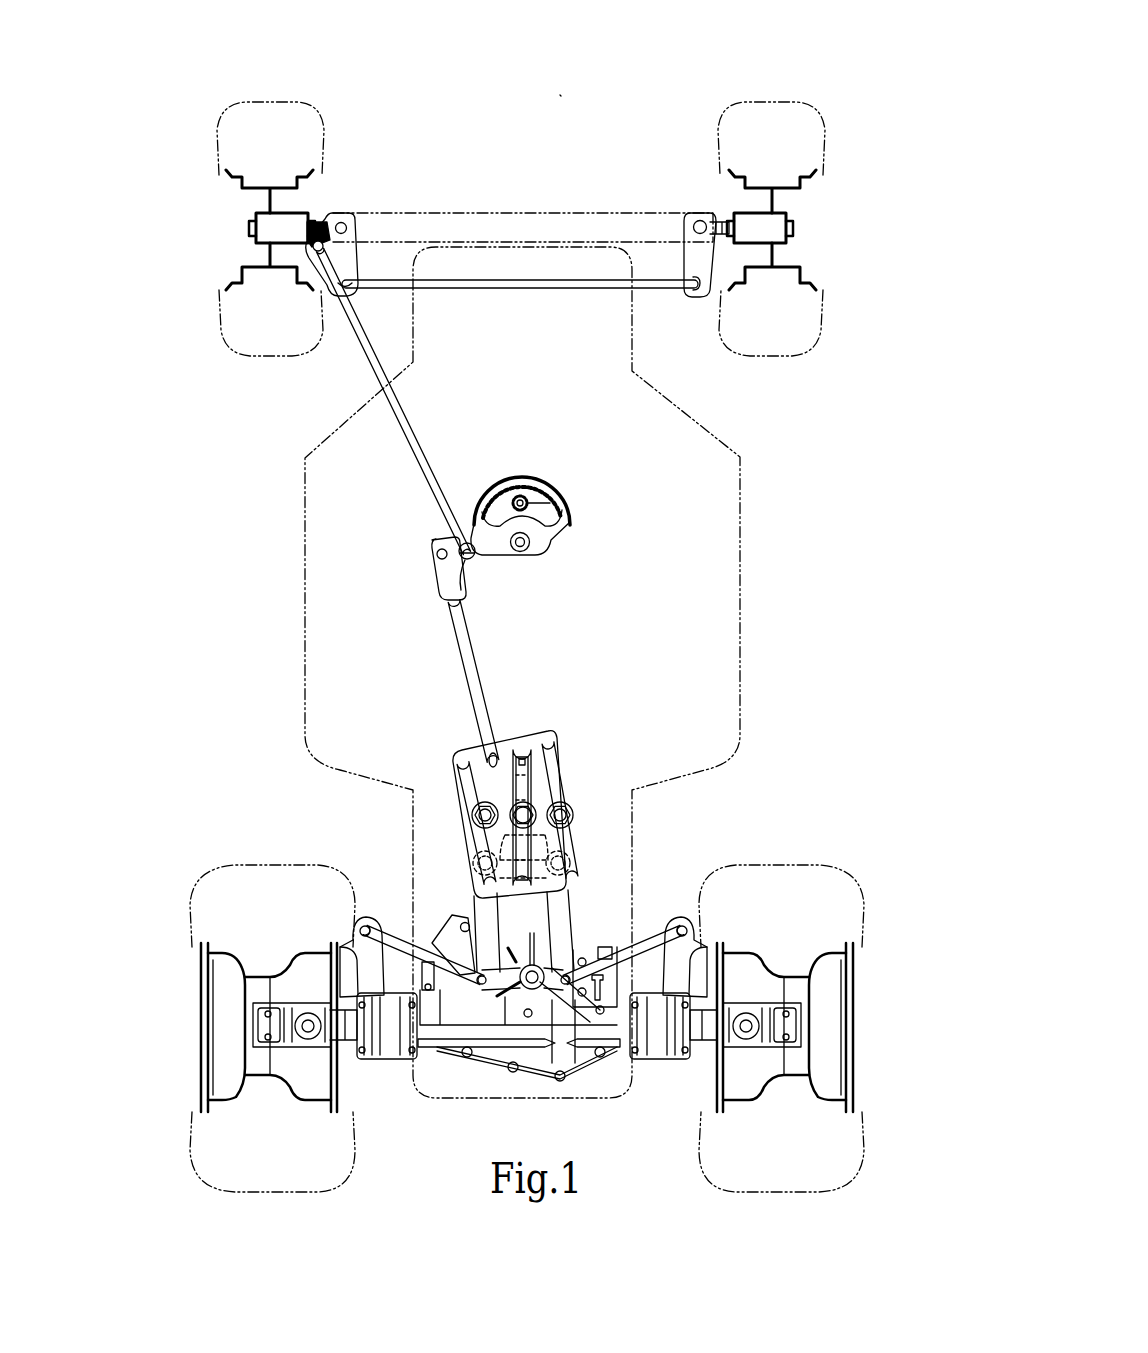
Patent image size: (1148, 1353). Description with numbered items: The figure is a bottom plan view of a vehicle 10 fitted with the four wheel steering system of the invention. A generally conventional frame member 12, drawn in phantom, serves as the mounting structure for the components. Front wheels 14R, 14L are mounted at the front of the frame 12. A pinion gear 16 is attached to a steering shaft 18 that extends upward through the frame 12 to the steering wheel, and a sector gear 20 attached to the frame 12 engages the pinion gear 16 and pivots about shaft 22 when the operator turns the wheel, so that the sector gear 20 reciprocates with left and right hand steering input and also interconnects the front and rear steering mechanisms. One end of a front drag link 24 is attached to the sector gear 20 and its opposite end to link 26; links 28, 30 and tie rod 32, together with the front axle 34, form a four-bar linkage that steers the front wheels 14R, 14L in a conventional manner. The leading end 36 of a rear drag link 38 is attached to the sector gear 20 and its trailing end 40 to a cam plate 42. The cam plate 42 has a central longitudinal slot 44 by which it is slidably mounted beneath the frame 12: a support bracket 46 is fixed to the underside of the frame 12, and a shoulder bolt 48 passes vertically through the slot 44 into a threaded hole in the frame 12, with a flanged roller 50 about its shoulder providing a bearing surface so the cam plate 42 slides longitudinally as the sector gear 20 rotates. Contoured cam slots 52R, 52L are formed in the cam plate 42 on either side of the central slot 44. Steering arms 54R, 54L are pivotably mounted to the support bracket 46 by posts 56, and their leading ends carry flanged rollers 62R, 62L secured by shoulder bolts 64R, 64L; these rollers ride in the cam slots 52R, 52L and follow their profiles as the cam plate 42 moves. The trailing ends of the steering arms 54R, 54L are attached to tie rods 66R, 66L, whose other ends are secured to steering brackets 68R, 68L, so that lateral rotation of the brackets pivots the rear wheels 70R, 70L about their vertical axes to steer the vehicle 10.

The vehicle 10 is at (563, 100).
The frame member 12 is at (740, 482).
The front wheel 14R is at (322, 115).
The front wheel 14L is at (828, 123).
The pinion gear 16 is at (552, 490).
The steering shaft 18 is at (520, 494).
The sector gear 20 is at (575, 525).
The shaft 22 is at (530, 545).
The front drag link 24 is at (415, 437).
The link 26 is at (318, 240).
The link 28 is at (352, 256).
The link 30 is at (685, 262).
The tie rod 32 is at (650, 287).
The front axle 34 is at (497, 215).
The leading end 36 is at (432, 556).
The rear drag link 38 is at (470, 650).
The trailing end 40 is at (497, 750).
The cam plate 42 is at (560, 730).
The longitudinal slot 44 is at (525, 748).
The support bracket 46 is at (528, 765).
The shoulder bolt 48 is at (540, 796).
The flanged roller 50 is at (545, 818).
The cam slot 52R is at (465, 763).
The cam slot 52L is at (580, 878).
The steering arm 54R is at (478, 902).
The steering arm 54L is at (575, 905).
The post 56 is at (519, 998).
The flanged roller 62R is at (478, 810).
The flanged roller 62L is at (568, 821).
The shoulder bolt 64R is at (480, 818).
The shoulder bolt 64L is at (562, 813).
The tie rod 66R is at (390, 925).
The tie rod 66L is at (620, 932).
The steering bracket 68R is at (360, 948).
The steering bracket 68L is at (688, 948).
The rear wheel 70R is at (202, 1000).
The rear wheel 70L is at (848, 992).